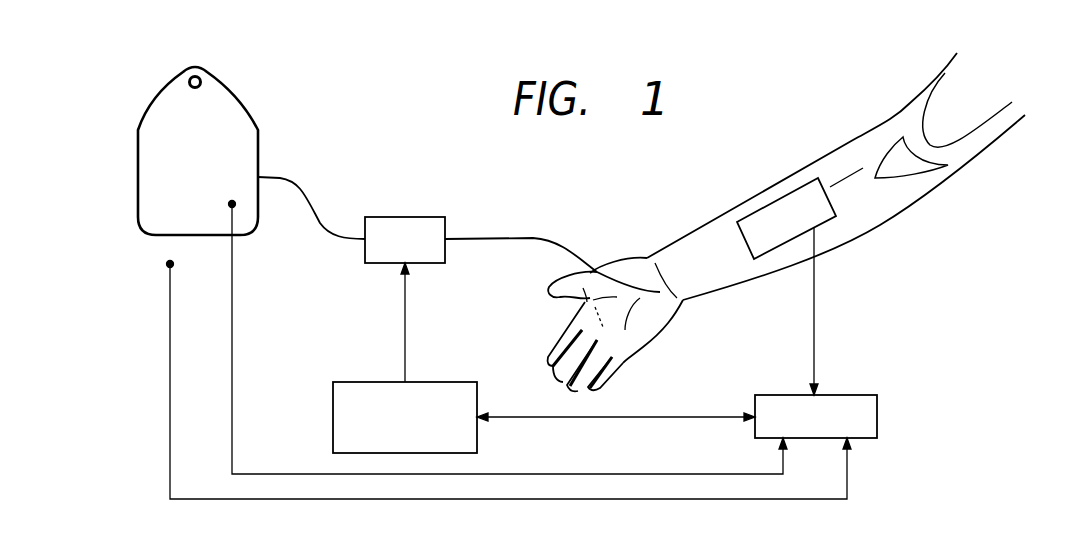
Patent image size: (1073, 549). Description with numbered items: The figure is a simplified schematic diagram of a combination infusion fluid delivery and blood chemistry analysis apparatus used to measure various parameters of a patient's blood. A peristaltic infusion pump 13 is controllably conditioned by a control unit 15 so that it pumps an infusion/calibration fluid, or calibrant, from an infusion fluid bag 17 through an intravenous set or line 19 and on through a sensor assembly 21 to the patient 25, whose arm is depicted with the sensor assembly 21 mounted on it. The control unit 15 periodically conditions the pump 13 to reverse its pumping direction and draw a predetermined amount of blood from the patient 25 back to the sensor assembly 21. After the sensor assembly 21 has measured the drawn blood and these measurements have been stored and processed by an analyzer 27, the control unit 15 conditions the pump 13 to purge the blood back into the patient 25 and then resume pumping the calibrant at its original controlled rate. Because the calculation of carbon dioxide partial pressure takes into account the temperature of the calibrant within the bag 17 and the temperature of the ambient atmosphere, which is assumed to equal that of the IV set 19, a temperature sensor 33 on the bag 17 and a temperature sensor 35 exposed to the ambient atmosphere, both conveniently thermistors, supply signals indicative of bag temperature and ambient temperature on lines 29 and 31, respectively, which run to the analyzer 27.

The peristaltic infusion pump 13 is at (415, 217).
The control unit 15 is at (363, 381).
The infusion fluid bag 17 is at (177, 128).
The intravenous (IV) set or line 19 is at (300, 185).
The sensor assembly 21 is at (767, 198).
The patient 25 is at (987, 110).
The analyzer 27 is at (877, 416).
The line 29 is at (232, 353).
The line 31 is at (170, 405).
The temperature sensor 33 is at (232, 204).
The temperature sensor 35 is at (170, 264).